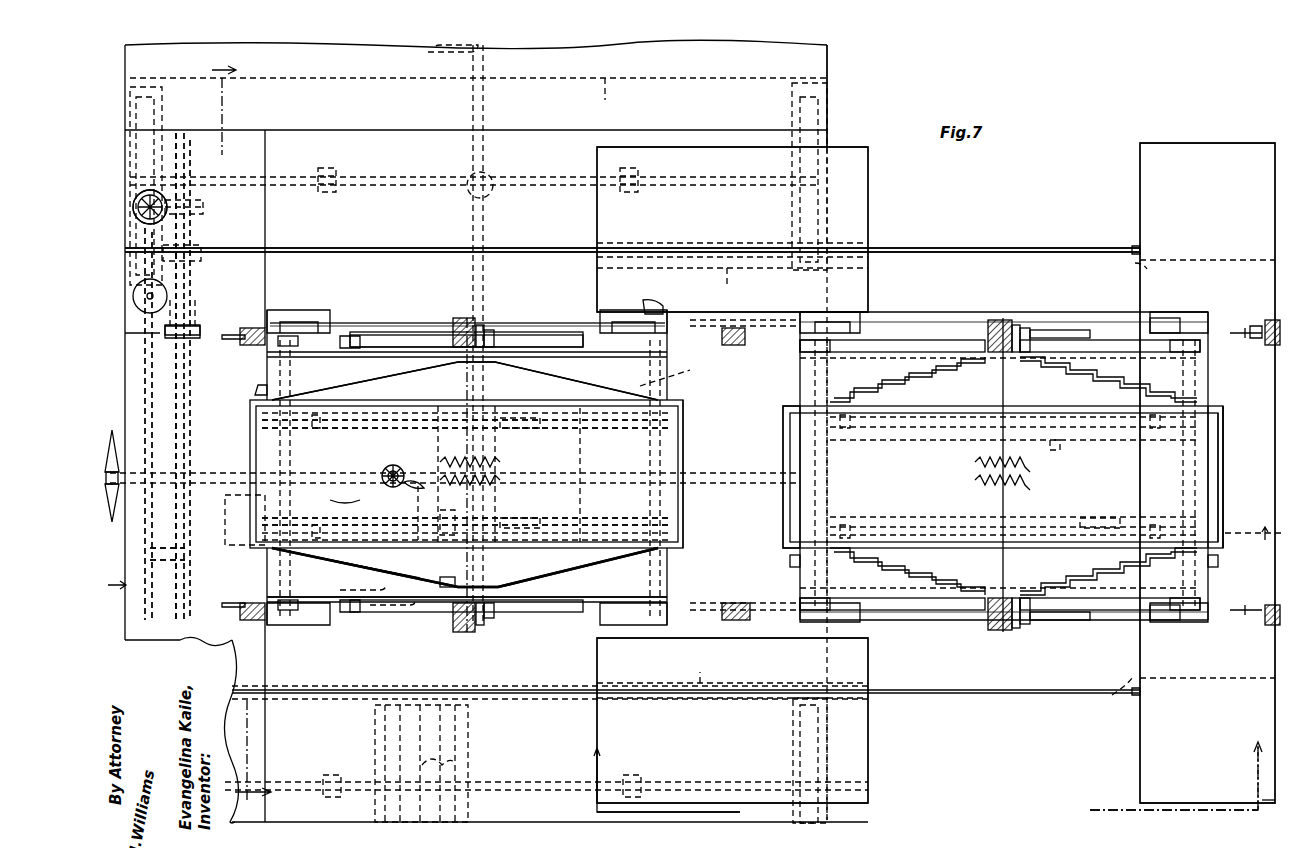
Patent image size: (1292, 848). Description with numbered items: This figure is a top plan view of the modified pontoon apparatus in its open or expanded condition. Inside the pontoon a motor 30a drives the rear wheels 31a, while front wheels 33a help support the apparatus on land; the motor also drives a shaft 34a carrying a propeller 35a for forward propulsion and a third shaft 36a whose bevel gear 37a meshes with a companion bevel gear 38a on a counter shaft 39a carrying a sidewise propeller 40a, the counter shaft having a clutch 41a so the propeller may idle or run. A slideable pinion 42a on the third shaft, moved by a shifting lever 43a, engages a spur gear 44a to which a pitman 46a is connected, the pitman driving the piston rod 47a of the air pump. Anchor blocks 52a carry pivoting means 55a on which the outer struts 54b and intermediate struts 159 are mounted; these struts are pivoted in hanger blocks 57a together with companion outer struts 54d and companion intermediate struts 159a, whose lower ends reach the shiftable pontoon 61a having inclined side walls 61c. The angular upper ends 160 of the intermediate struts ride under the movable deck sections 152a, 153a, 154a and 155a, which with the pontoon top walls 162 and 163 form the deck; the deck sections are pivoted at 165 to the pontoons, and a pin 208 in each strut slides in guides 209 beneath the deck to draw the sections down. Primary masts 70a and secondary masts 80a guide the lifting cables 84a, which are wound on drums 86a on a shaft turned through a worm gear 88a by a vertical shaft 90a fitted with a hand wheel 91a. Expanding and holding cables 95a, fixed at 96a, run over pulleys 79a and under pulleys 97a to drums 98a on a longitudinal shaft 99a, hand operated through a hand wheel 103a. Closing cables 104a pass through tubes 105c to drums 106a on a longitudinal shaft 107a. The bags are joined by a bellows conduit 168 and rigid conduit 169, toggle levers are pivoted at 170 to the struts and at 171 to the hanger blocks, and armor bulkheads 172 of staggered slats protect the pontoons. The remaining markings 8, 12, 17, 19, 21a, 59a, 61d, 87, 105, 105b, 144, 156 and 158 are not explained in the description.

The section line 8 is at (697, 564).
The section line 12 is at (1250, 769).
The section line 17 is at (910, 807).
The section line 19 is at (234, 433).
The frame 21a is at (833, 58).
The motor 30a is at (380, 740).
The rear wheels 31a is at (150, 115).
The front wheels 33a is at (818, 752).
The shaft 34a is at (473, 236).
The propeller 35a is at (438, 54).
The third shaft 36a is at (405, 650).
The pinion 37a is at (420, 470).
The companion bevel gear 38a is at (385, 465).
The counter shaft 39a is at (232, 472).
The propeller 40a is at (112, 430).
The clutch 41a is at (334, 507).
The slideable pinion 42a is at (363, 587).
The shifting lever 43a is at (372, 610).
The spur gear 44a is at (455, 568).
The pitman 46a is at (398, 568).
The piston rod 47a is at (352, 558).
The anchor blocks 52a is at (292, 336).
The outer struts 54b is at (350, 336).
The companion outer struts 54d is at (590, 378).
The pivoting means 55a is at (445, 341).
The hanger blocks 57a is at (456, 318).
The partition 59a is at (560, 475).
The shiftable pontoon 61a is at (600, 726).
The inclined side walls 61c is at (863, 400).
The conduit 61d is at (649, 381).
The primary masts 70a is at (252, 328).
The pulleys 79a is at (480, 325).
The secondary masts 80a is at (492, 330).
The lifting cables 84a is at (238, 340).
The drums 86a is at (140, 357).
The pipe 87 is at (188, 404).
The worm gear 88a is at (200, 207).
The vertical shaft 90a is at (134, 212).
The hand wheel 91a is at (133, 200).
The expanding and holding cables 95a is at (1110, 330).
The cable fixing point 96a is at (1192, 318).
The pulleys 97a is at (300, 298).
The drums 98a is at (206, 318).
The longitudinal shaft 99a is at (188, 392).
The hand wheel 103a is at (136, 290).
The closing cables 104a is at (348, 248).
The plate 105 is at (1220, 404).
The shaft end 105b is at (1137, 247).
The tubes 105c is at (868, 230).
The drums 106a is at (203, 232).
The longitudinal shaft 107a is at (212, 270).
The bracket 144 is at (262, 383).
The movable deck section 152a is at (322, 388).
The movable deck section 153a is at (490, 372).
The movable deck section 154a is at (785, 452).
The movable deck section 155a is at (1218, 460).
The line 156 is at (150, 548).
The line 158 is at (150, 560).
The intermediate struts 159 is at (393, 410).
The companion intermediate struts 159a is at (467, 506).
The angular upper ends 160 is at (445, 420).
The top wall 162 is at (680, 440).
The top wall 163 is at (1140, 207).
The pivot 165 is at (790, 560).
The extensible bellows conduit 168 is at (520, 458).
The rigid conduit 169 is at (560, 332).
The pivot 170 is at (887, 342).
The pivot 171 is at (990, 365).
The armor bulkheads 172 is at (880, 388).
The pin 208 is at (448, 455).
The guides 209 is at (330, 415).